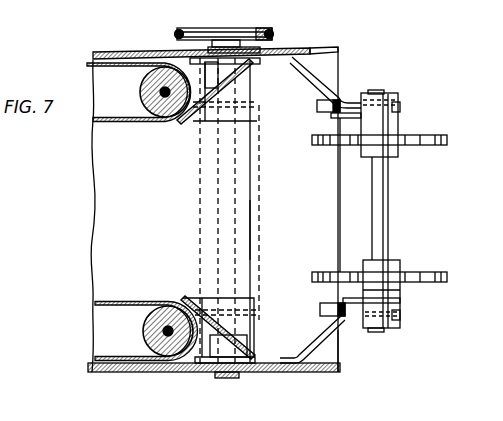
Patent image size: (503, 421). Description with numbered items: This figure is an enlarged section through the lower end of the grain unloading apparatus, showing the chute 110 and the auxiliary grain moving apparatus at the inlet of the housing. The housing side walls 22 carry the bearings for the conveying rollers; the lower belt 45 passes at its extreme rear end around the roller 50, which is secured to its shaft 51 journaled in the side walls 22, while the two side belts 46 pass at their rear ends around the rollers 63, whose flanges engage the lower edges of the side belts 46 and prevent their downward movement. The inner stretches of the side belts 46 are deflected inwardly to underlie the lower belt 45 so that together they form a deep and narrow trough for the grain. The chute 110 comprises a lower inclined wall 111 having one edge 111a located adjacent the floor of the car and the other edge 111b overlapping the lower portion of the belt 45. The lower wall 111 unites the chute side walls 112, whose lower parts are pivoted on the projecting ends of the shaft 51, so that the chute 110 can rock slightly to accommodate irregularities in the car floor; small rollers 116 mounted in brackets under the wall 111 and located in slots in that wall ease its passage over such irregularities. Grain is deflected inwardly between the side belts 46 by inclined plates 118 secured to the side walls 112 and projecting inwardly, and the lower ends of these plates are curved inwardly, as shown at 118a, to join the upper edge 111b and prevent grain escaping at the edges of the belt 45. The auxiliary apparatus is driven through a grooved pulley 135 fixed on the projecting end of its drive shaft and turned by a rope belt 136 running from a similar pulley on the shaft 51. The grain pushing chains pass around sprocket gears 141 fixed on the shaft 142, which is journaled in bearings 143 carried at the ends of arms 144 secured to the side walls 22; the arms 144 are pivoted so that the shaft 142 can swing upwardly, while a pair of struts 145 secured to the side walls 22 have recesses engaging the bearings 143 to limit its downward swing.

The side walls 22 is at (118, 52).
The lower belt 45 is at (98, 228).
The side belts 46 is at (112, 113).
The roller 50 is at (200, 237).
The shaft 51 is at (237, 378).
The rollers 63 is at (146, 113).
The chute 110 is at (338, 188).
The lower inclined wall 111 is at (338, 360).
The edge 111a is at (342, 347).
The edge 111b is at (245, 240).
The side walls 112 is at (323, 47).
The small rollers 116 is at (334, 100).
The inclined plates 118 is at (180, 122).
The curved lower ends 118a is at (213, 113).
The grooved pulley 135 is at (229, 32).
The rope belt 136 is at (273, 33).
The sprocket gears 141 is at (447, 139).
The shaft 142 is at (391, 241).
The bearings 143 is at (400, 98).
The arms 144 is at (331, 116).
The struts 145 is at (327, 80).